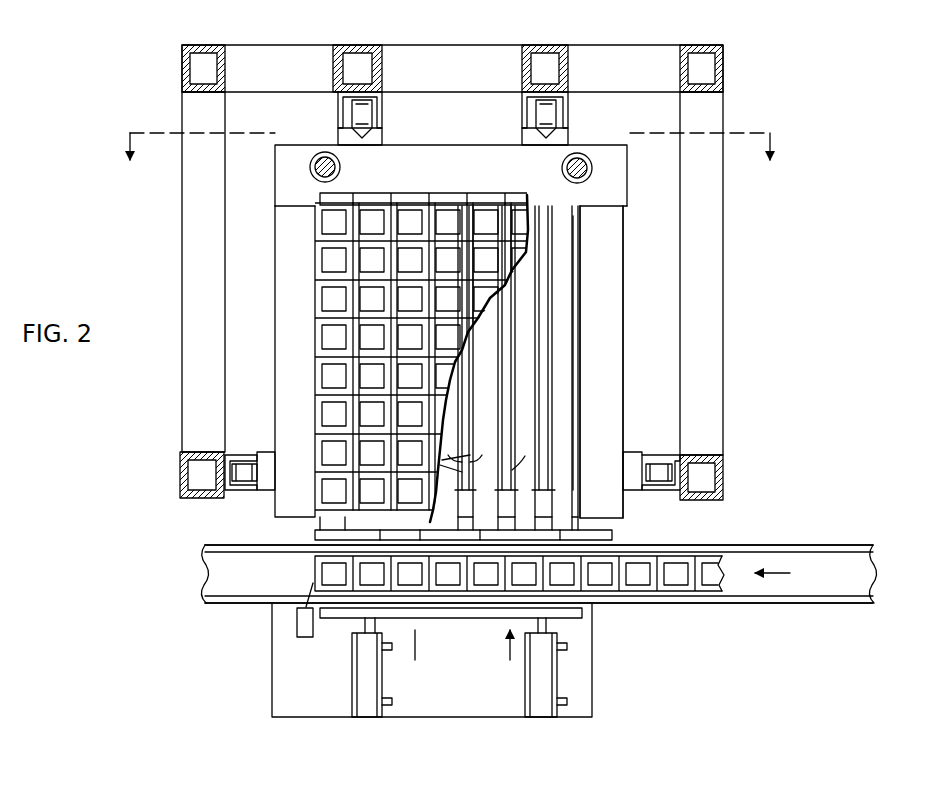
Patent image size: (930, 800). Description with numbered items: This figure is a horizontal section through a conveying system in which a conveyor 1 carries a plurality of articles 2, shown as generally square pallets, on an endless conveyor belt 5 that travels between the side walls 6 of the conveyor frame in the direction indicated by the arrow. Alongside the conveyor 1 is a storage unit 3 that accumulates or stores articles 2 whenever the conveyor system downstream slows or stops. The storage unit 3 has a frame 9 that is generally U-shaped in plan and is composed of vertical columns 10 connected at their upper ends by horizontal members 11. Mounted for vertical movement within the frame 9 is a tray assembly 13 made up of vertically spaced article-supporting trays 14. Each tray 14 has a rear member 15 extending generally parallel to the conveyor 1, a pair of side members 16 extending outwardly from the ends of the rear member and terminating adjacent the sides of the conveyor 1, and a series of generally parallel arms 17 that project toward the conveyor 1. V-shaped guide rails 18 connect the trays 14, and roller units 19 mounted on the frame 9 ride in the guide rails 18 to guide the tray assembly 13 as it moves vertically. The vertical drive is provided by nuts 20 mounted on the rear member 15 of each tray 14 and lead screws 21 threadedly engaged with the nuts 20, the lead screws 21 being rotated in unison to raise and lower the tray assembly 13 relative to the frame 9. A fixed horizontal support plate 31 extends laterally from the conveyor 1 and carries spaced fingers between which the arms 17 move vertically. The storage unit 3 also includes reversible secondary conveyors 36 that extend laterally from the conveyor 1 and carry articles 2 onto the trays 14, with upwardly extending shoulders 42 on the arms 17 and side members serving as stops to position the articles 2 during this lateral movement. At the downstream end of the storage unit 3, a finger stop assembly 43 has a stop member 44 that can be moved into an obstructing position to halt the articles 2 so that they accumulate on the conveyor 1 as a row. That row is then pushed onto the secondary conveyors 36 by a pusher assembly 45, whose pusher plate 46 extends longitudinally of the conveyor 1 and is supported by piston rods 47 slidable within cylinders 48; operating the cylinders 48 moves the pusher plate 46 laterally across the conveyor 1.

The conveyor 1 is at (798, 545).
The articles 2 is at (450, 208).
The storage unit 3 is at (723, 350).
The endless conveyor belt 5 is at (858, 570).
The side walls 6 is at (232, 548).
The frame 9 is at (305, 45).
The vertical columns 10 is at (228, 45).
The horizontal members 11 is at (640, 58).
The tray assembly 13 is at (623, 277).
The trays 14 is at (623, 352).
The rear member 15 is at (298, 152).
The side members 16 is at (275, 242).
The arms 17 is at (492, 462).
The guide rails 18 is at (384, 138).
The roller units 19 is at (375, 116).
The nuts 20 is at (341, 167).
The lead screws 21 is at (325, 167).
The horizontal support plate 31 is at (310, 534).
The secondary conveyors 36 is at (490, 355).
The shoulders 42 is at (555, 218).
The finger stop assembly 43 is at (297, 622).
The stop member 44 is at (305, 597).
The pusher assembly 45 is at (352, 690).
The pusher plate 46 is at (455, 618).
The piston rods 47 is at (365, 625).
The cylinders 48 is at (382, 688).